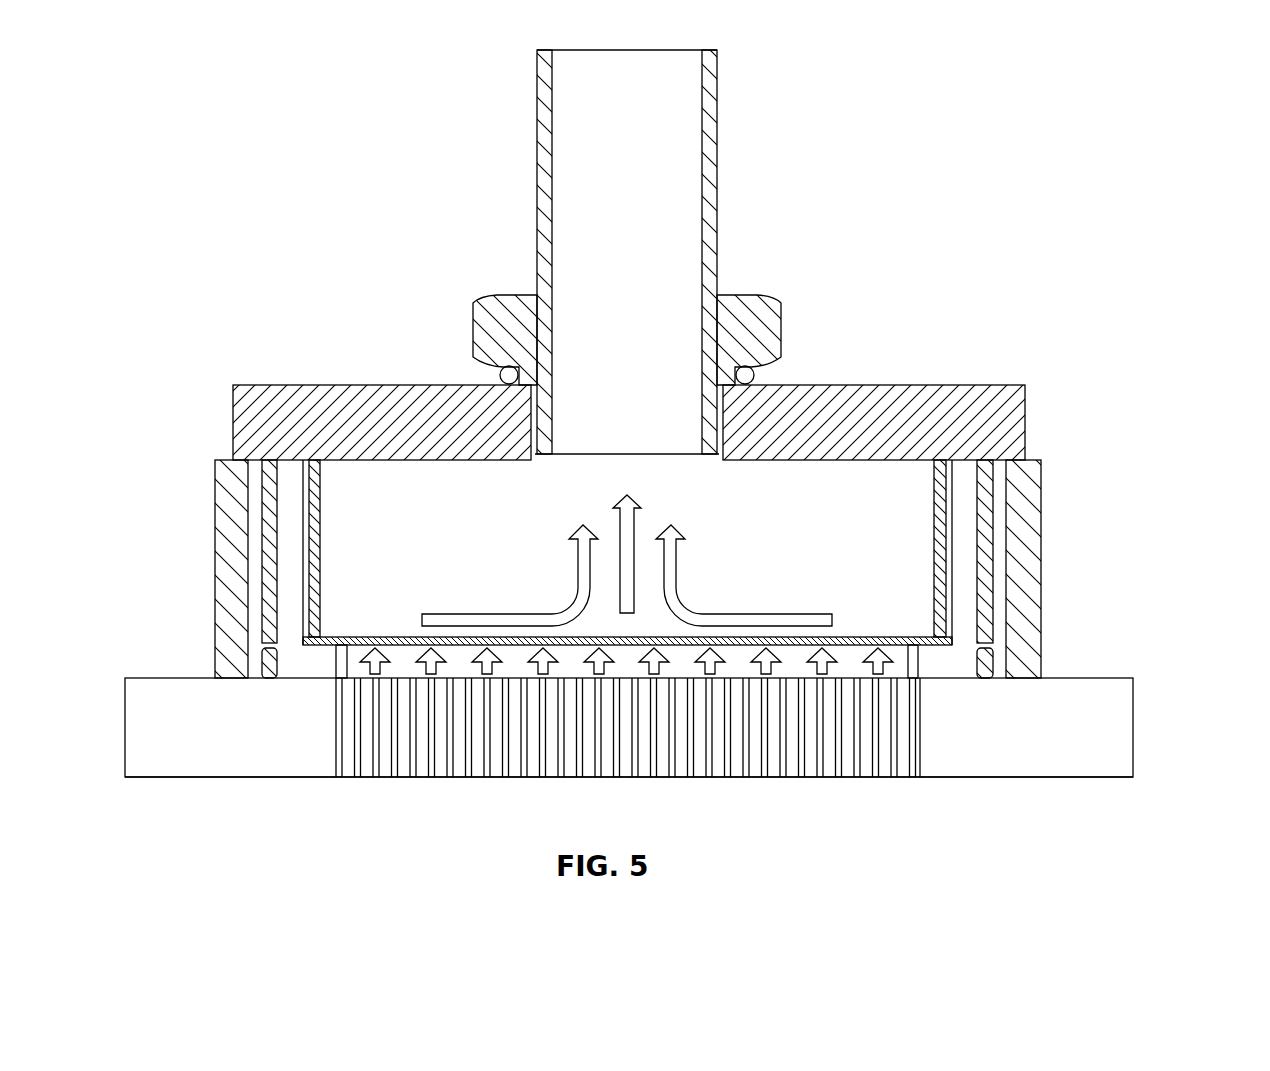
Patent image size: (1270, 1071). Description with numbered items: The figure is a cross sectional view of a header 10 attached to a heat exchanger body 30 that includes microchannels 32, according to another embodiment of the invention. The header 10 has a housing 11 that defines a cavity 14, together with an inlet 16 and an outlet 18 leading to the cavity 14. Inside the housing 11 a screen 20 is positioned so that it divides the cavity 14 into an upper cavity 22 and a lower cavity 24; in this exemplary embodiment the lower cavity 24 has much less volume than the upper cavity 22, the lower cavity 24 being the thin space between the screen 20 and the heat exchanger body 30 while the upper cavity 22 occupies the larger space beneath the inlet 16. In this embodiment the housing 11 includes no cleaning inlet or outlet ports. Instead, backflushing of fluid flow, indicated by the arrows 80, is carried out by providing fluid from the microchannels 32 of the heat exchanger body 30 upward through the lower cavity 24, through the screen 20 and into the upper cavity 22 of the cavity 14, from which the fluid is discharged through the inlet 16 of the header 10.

The header 10 is at (912, 384).
The housing 11 is at (1043, 512).
The cavity 14 is at (348, 498).
The inlet 16 is at (717, 183).
The outlet 18 is at (907, 685).
The screen 20 is at (353, 633).
The upper cavity 22 is at (433, 485).
The lower cavity 24 is at (407, 660).
The heat exchanger body 30 is at (1133, 728).
The microchannels 32 is at (782, 777).
The arrows 80 is at (680, 585).